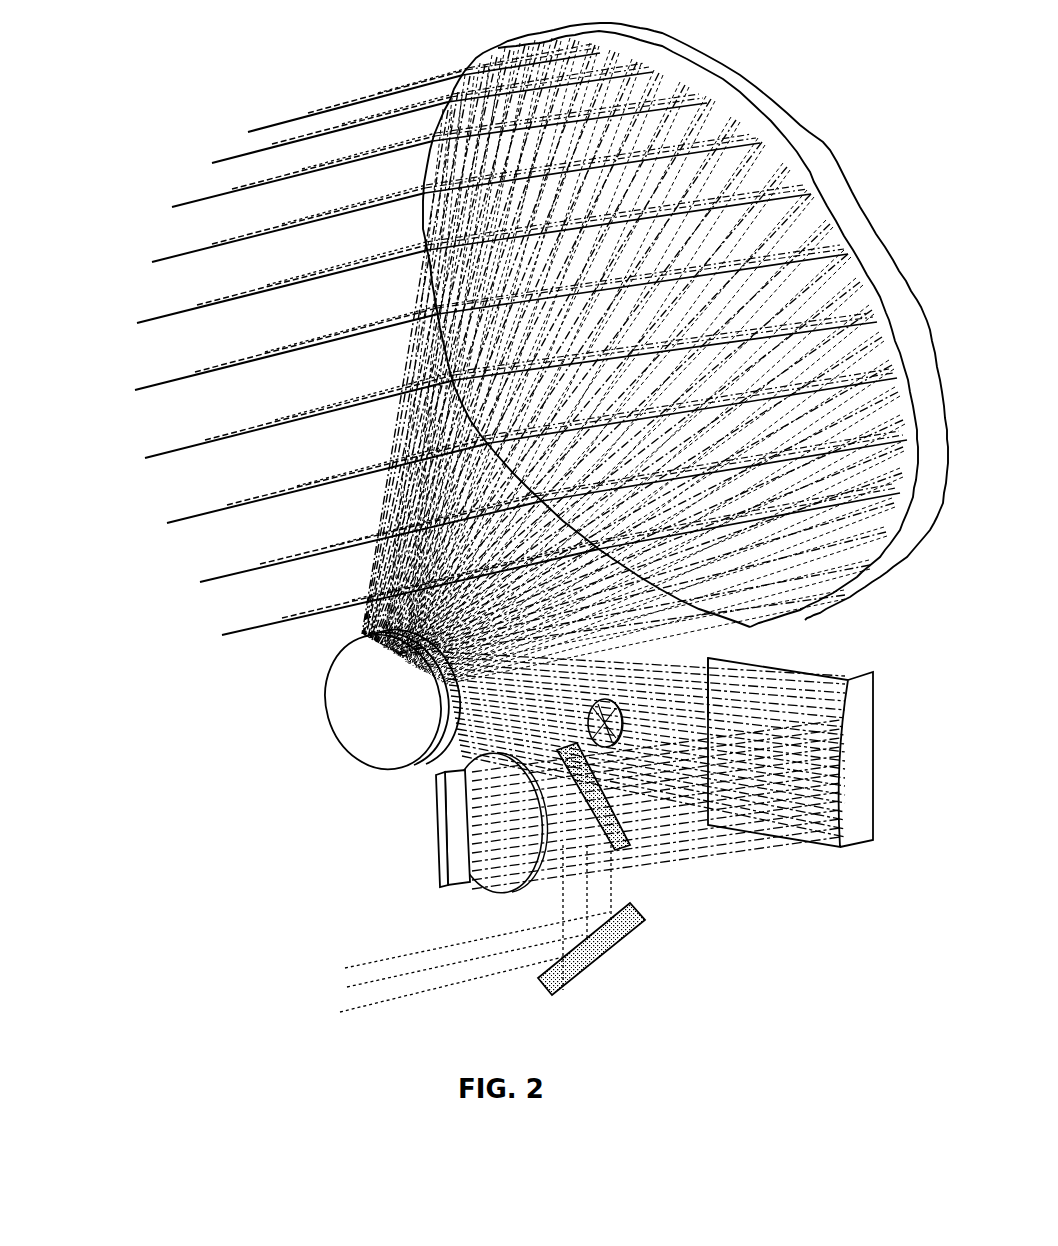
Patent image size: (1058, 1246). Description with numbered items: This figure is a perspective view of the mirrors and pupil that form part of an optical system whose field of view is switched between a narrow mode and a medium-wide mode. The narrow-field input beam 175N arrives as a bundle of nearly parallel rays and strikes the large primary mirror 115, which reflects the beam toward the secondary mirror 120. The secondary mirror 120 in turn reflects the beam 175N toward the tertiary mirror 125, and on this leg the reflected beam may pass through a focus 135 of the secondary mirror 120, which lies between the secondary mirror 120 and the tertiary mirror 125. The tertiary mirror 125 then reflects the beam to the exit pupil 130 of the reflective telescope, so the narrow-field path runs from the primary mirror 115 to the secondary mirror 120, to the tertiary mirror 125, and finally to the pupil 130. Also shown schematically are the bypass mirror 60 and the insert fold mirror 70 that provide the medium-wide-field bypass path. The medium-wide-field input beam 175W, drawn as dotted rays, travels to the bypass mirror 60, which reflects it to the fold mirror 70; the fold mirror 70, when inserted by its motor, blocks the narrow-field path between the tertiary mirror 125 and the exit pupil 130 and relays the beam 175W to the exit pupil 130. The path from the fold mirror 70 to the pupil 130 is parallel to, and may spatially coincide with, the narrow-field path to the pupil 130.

The primary mirror 115 is at (732, 78).
The secondary mirror 120 is at (330, 688).
The tertiary mirror 125 is at (873, 752).
The exit pupil 130 is at (435, 832).
The focus 135 is at (712, 657).
The insert fold mirror 70 is at (625, 848).
The bypass mirror 60 is at (620, 942).
The input beam 175N is at (131, 102).
The input beam 175W is at (327, 947).